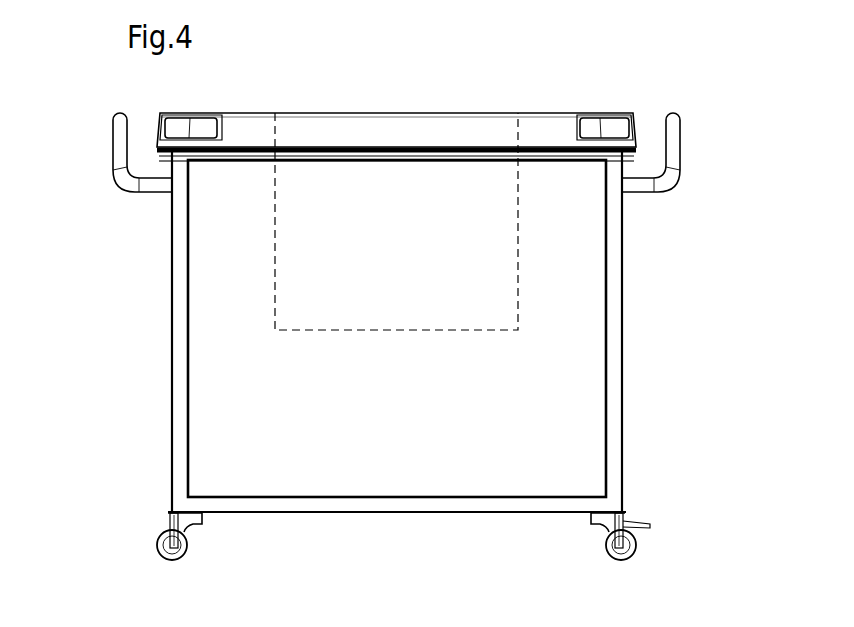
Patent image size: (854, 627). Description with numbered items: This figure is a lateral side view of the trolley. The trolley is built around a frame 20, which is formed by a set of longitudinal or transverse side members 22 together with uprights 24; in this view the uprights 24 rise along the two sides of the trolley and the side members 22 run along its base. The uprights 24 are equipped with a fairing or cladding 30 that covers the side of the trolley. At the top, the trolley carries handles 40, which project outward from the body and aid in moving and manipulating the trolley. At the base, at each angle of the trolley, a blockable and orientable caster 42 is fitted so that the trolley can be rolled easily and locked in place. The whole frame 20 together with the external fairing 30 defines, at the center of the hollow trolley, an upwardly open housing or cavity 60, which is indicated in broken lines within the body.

The frame 20 is at (407, 342).
The side members 22 is at (393, 505).
The uprights 24 is at (172, 389).
The fairing 30 is at (523, 443).
The handles 40 is at (118, 128).
The caster 42 is at (193, 553).
The housing 60 is at (382, 216).